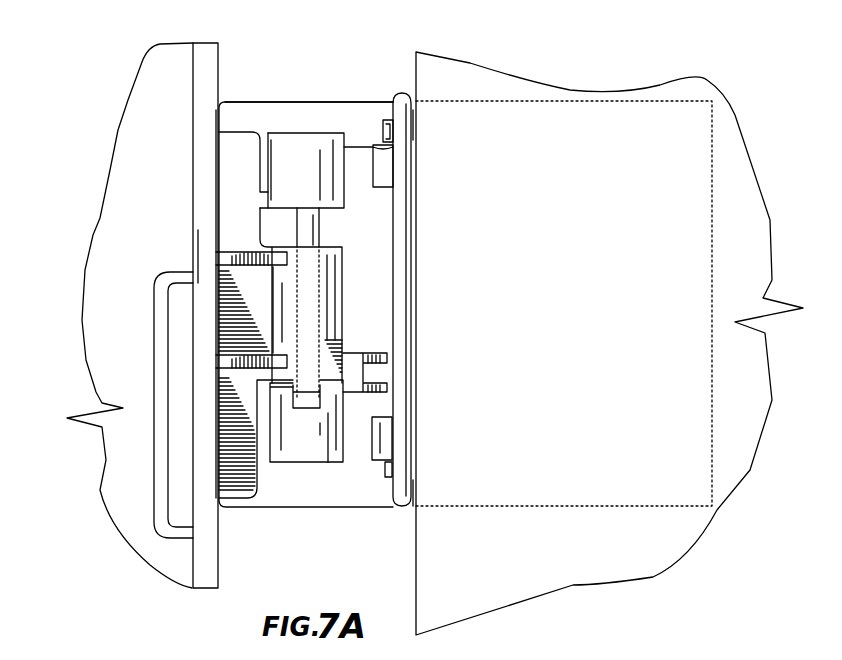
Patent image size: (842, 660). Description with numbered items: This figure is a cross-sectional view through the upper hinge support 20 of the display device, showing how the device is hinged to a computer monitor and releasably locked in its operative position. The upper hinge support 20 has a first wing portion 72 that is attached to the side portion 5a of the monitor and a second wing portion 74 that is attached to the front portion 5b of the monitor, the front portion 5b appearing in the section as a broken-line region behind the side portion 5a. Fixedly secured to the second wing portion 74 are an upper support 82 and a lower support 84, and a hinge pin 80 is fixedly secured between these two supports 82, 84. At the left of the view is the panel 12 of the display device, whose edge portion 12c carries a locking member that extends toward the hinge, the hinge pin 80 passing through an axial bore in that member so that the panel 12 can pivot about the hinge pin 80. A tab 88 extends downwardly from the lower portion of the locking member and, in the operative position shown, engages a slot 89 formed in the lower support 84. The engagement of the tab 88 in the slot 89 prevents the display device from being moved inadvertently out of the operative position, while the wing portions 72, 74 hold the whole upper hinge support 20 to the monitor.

The panel 12 is at (137, 177).
The edge portion 12c is at (218, 60).
The upper hinge support 20 is at (266, 88).
The second wing portion 74 is at (338, 100).
The side portion 5a is at (416, 80).
The front portion 5b is at (458, 88).
The support 82 is at (313, 172).
The hinge pin 80 is at (310, 238).
The tab 88 is at (306, 400).
The slot 89 is at (316, 405).
The support 84 is at (327, 448).
The first wing portion 72 is at (402, 278).